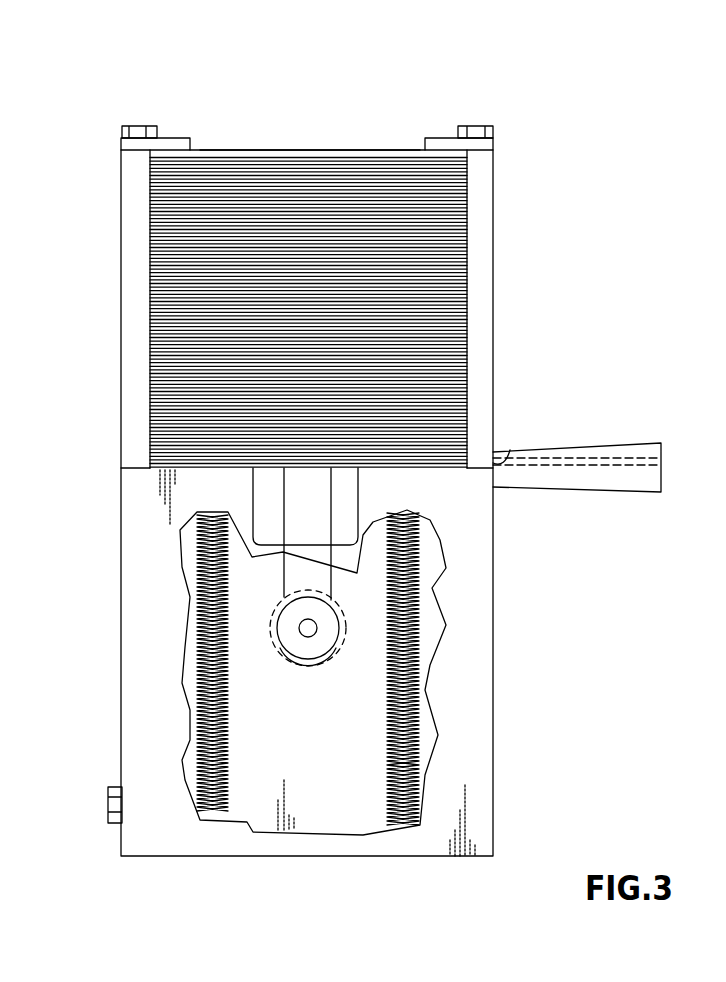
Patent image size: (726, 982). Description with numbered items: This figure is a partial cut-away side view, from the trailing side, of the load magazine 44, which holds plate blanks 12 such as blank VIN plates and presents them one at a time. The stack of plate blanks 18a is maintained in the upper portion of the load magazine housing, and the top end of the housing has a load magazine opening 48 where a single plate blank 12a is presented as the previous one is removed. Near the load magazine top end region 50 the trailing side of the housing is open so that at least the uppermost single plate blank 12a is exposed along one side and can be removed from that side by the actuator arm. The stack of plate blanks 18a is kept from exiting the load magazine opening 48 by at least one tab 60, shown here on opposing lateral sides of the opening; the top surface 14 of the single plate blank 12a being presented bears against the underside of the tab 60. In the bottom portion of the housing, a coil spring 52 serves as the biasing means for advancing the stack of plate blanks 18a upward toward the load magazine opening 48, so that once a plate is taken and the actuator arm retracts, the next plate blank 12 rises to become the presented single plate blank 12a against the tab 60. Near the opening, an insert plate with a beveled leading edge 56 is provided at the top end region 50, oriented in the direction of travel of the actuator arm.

The load magazine top end region 50 is at (384, 70).
The load magazine opening 48 is at (262, 130).
The single plate blank 12a is at (313, 150).
The top surface 14 is at (425, 150).
The tab 60 is at (122, 143).
The beveled leading edge 56 is at (198, 157).
The stack of plate blanks 18a is at (498, 160).
The plate blank 12 is at (437, 445).
The load magazine 44 is at (518, 602).
The coil spring 52 is at (197, 687).